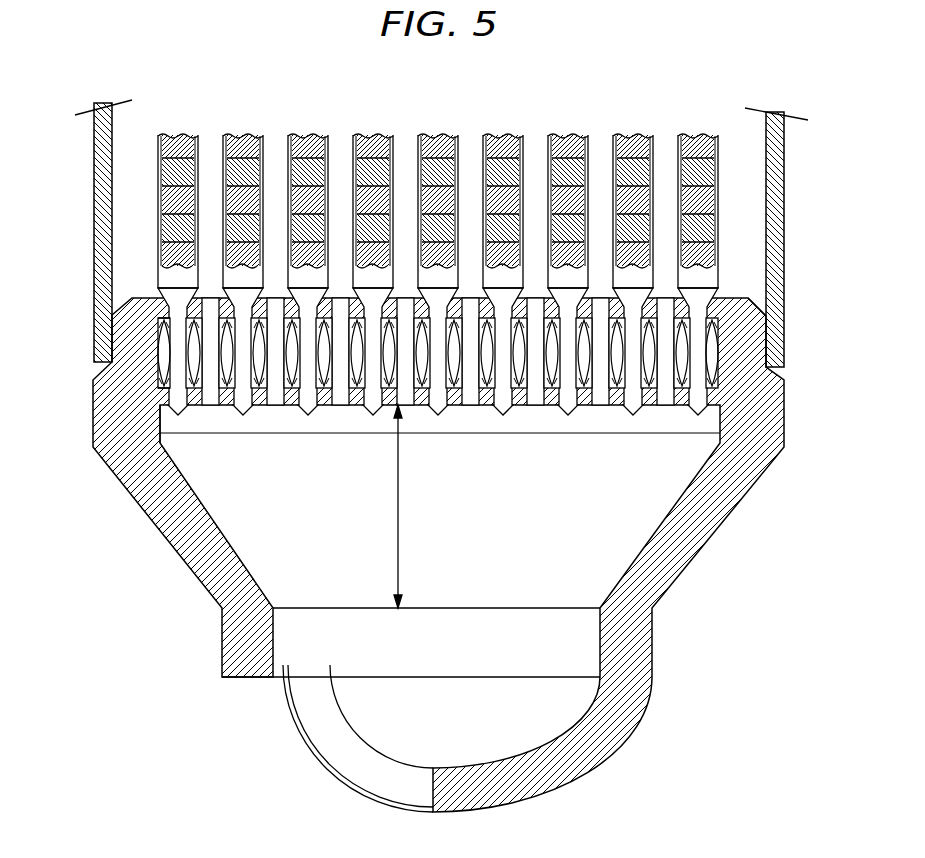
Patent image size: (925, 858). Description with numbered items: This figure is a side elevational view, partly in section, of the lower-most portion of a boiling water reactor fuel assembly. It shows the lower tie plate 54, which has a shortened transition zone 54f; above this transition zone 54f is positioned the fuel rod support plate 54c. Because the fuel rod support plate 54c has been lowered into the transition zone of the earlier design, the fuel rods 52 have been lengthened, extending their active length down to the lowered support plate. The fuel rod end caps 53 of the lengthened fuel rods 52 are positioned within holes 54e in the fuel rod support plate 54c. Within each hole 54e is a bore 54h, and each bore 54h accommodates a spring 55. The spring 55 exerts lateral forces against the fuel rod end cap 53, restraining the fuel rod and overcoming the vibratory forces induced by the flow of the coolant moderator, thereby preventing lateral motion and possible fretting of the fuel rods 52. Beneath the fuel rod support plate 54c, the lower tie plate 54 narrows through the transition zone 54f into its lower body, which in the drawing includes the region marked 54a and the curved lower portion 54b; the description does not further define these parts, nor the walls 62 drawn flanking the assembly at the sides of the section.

The fuel rod 52 is at (158, 217).
The fuel rod end cap 53 is at (177, 332).
The lower tie plate 54 is at (707, 510).
The ink chamber 54a is at (600, 642).
The curved bottom wall 54b is at (623, 675).
The fuel rod support plate 54c is at (745, 342).
The hole 54e is at (355, 312).
The transition zone 54f is at (398, 525).
The bore 54h is at (160, 400).
The spring 55 is at (160, 350).
The side wall 62 is at (93, 165).